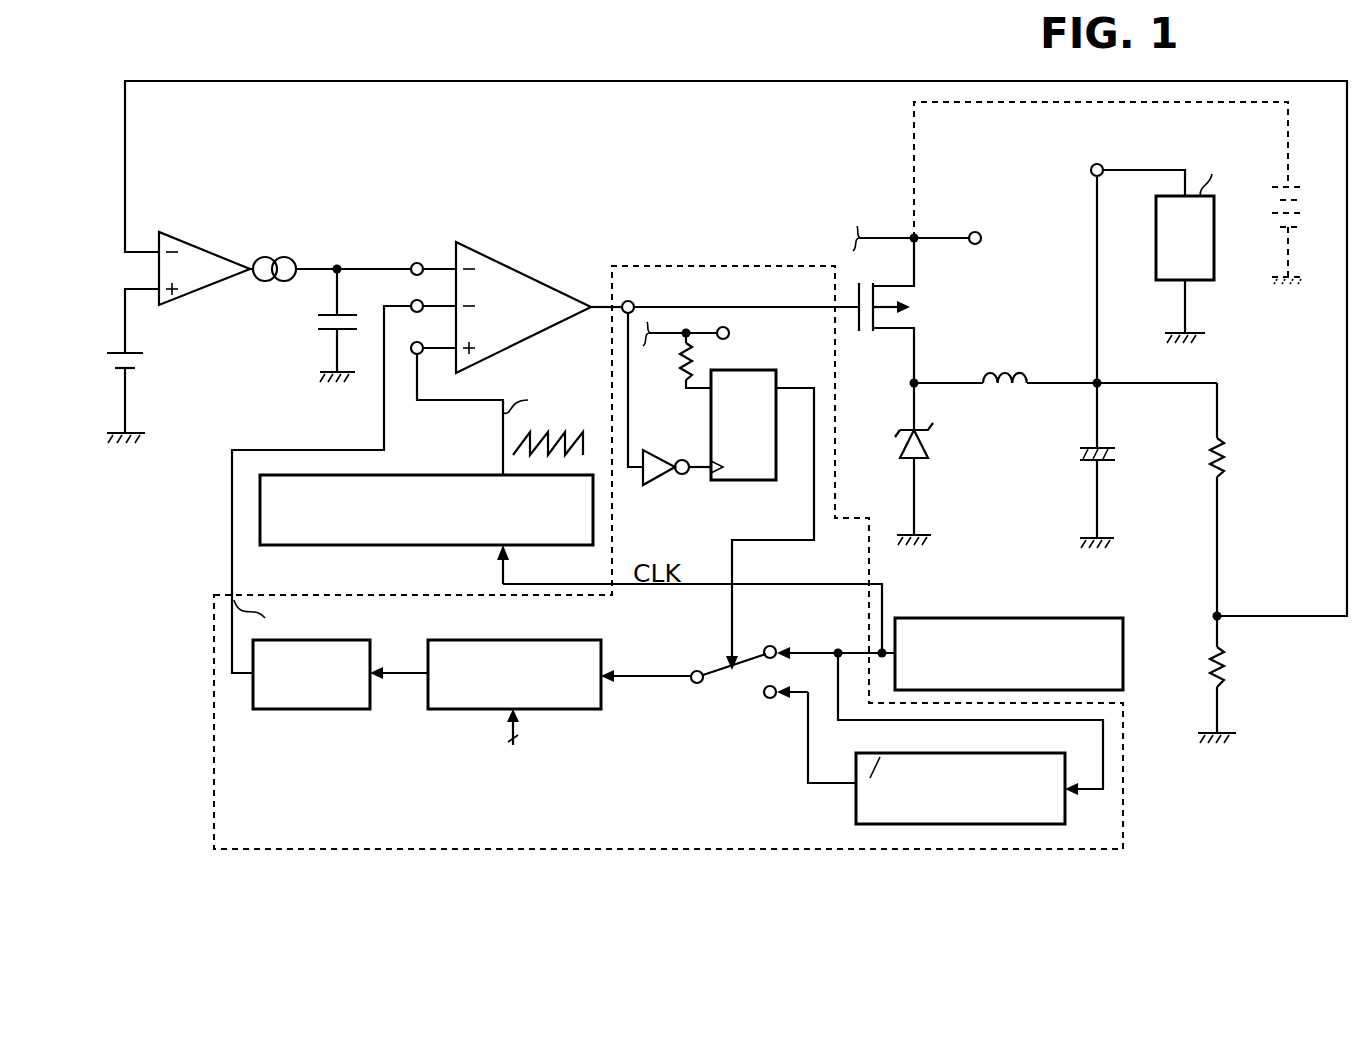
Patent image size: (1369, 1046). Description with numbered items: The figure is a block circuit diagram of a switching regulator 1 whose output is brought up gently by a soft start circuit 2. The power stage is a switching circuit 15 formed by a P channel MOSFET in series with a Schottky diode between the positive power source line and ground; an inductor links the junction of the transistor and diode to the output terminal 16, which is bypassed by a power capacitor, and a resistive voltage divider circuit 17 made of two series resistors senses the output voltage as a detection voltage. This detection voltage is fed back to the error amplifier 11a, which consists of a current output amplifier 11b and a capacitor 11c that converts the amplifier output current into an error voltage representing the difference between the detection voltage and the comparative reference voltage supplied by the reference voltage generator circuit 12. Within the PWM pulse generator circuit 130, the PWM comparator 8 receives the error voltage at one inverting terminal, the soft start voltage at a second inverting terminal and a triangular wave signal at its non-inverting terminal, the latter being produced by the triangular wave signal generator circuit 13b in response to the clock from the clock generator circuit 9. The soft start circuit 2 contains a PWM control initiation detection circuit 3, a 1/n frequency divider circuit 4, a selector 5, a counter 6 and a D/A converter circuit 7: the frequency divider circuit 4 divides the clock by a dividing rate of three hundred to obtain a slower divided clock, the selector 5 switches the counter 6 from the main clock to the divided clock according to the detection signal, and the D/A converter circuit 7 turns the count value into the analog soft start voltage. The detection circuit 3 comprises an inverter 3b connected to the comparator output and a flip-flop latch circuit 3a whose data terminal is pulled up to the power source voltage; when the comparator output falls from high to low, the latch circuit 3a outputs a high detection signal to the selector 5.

The switching regulator 1 is at (768, 50).
The soft start circuit 2 is at (726, 822).
The PWM control initiation detection circuit 3 is at (716, 485).
The latch circuit 3a is at (748, 370).
The inverter 3b is at (656, 452).
The 1/n frequency divider circuit 4 is at (985, 826).
The selector 5 is at (727, 692).
The counter 6 is at (556, 641).
The D/A converter circuit 7 is at (353, 640).
The PWM comparator 8 is at (508, 263).
The clock generator circuit 9 is at (1015, 618).
The error amplifier 11a is at (258, 192).
The current output amplifier 11b is at (195, 240).
The capacitor 11c is at (318, 329).
The reference voltage generator circuit 12 is at (140, 352).
The PWM pulse generator circuit 130 is at (584, 245).
The triangular wave signal generator circuit 13b is at (395, 545).
The switching circuit 15 is at (946, 220).
The output terminal 16 is at (1097, 164).
The resistive voltage divider circuit 17 is at (1238, 565).